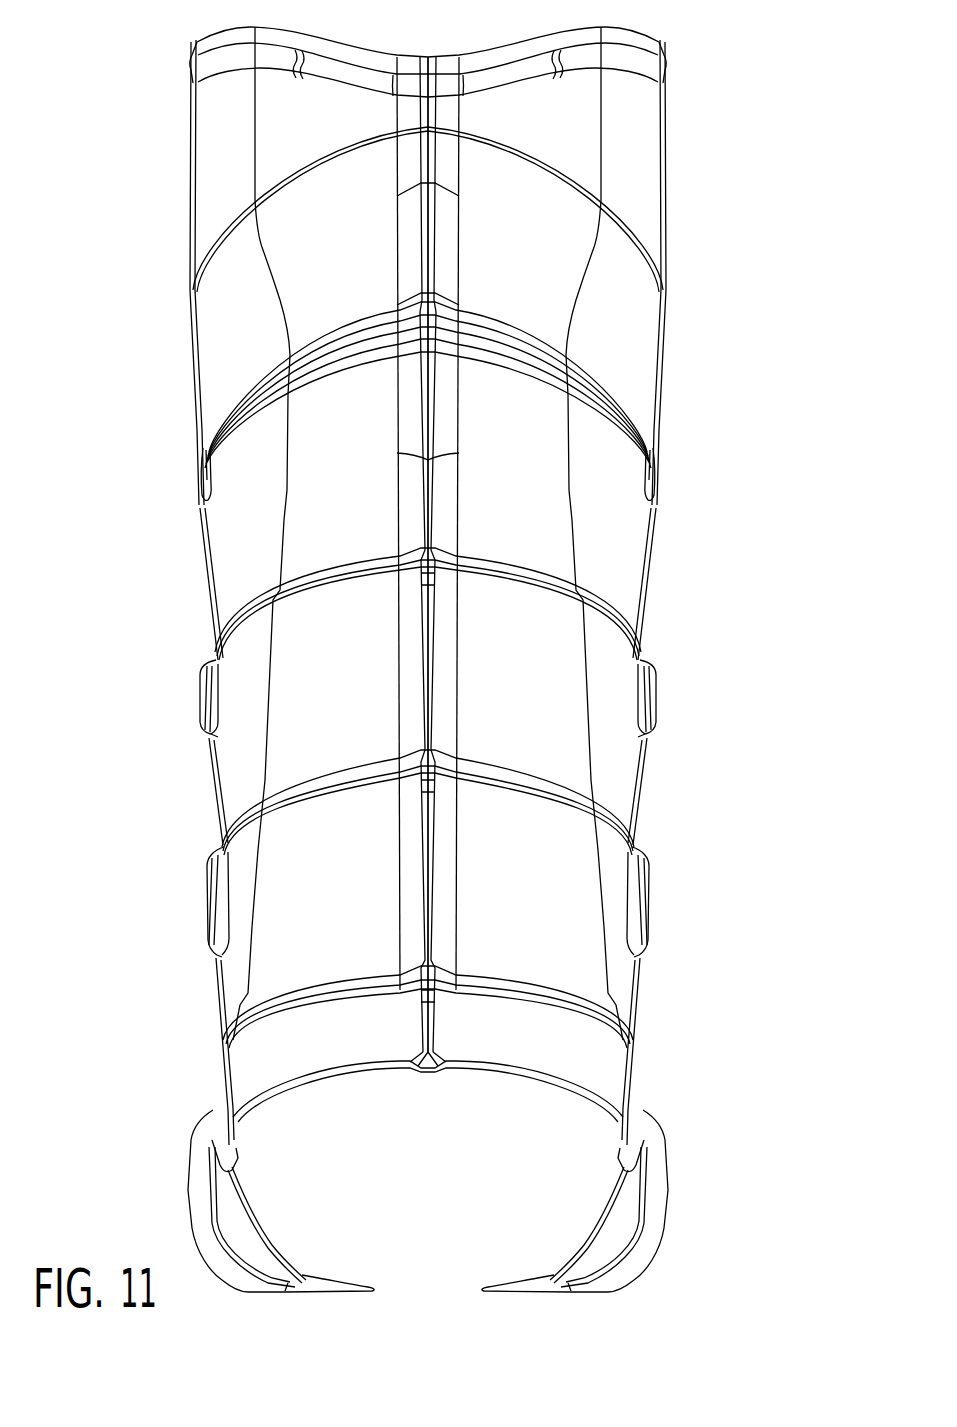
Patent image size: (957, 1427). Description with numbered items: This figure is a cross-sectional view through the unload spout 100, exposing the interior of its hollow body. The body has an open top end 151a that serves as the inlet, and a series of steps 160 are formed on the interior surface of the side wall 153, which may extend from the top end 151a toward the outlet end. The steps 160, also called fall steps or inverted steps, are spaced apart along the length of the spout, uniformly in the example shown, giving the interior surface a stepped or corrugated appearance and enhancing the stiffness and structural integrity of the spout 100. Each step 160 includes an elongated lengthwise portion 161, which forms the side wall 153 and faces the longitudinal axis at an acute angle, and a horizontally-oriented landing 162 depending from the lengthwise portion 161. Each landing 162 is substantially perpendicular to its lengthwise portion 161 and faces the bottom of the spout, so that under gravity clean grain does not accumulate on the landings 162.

The unload spout 100 is at (427, 650).
The open top end 151a is at (497, 50).
The side wall 153 is at (365, 592).
The lengthwise portion 161 is at (203, 570).
The landing 162 is at (205, 502).
The step 160 is at (208, 508).